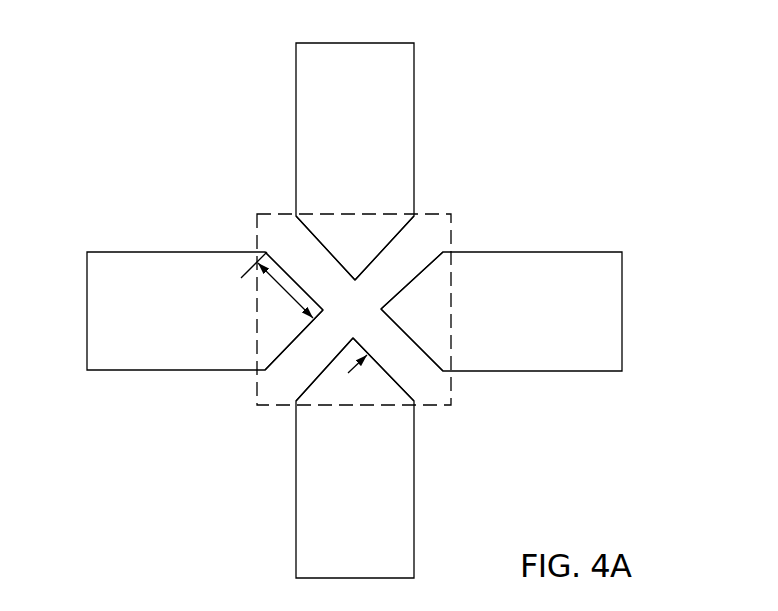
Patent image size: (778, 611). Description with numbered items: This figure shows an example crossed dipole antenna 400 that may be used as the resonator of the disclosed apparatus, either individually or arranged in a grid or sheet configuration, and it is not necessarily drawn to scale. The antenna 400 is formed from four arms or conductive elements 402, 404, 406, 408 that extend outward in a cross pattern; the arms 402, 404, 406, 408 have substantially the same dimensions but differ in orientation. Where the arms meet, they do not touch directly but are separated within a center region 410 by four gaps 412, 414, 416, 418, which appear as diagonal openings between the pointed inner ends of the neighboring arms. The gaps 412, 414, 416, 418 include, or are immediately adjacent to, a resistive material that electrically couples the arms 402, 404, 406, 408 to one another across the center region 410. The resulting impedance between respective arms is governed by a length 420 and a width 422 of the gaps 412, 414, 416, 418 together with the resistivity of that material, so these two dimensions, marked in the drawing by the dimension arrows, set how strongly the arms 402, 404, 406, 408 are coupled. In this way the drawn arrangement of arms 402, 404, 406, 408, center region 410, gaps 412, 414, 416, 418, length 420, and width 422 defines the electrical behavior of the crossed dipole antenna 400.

The crossed dipole antenna 400 is at (335, 308).
The arm 402 is at (173, 297).
The arm 404 is at (313, 458).
The arm 406 is at (514, 297).
The arm 408 is at (397, 161).
The center region 410 is at (376, 333).
The gap 412 is at (275, 362).
The gap 414 is at (432, 362).
The gap 416 is at (430, 261).
The gap 418 is at (272, 260).
The length 420 is at (240, 314).
The width 422 is at (328, 402).